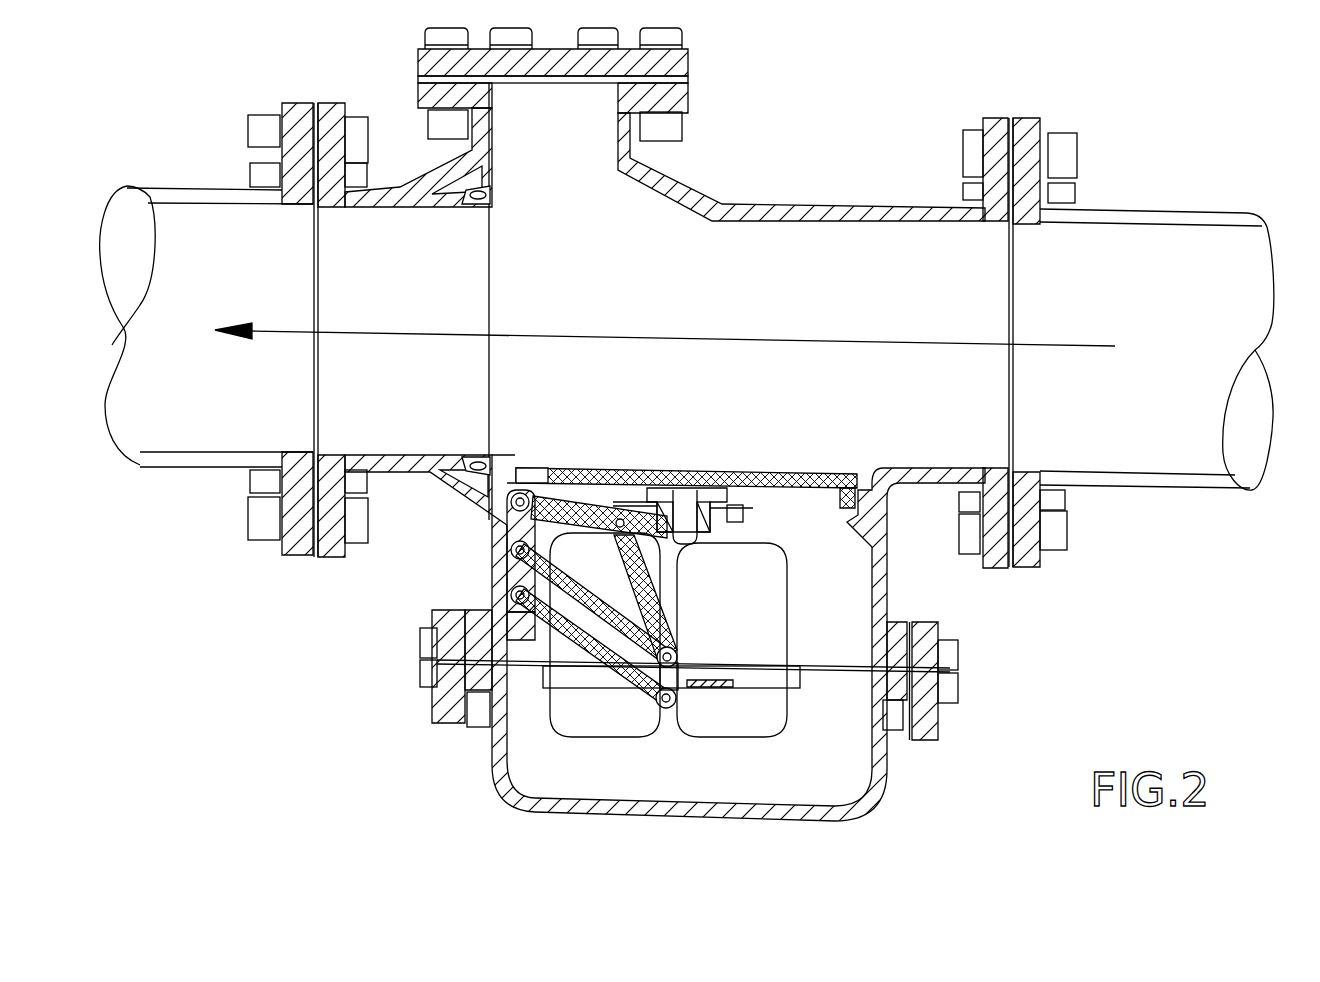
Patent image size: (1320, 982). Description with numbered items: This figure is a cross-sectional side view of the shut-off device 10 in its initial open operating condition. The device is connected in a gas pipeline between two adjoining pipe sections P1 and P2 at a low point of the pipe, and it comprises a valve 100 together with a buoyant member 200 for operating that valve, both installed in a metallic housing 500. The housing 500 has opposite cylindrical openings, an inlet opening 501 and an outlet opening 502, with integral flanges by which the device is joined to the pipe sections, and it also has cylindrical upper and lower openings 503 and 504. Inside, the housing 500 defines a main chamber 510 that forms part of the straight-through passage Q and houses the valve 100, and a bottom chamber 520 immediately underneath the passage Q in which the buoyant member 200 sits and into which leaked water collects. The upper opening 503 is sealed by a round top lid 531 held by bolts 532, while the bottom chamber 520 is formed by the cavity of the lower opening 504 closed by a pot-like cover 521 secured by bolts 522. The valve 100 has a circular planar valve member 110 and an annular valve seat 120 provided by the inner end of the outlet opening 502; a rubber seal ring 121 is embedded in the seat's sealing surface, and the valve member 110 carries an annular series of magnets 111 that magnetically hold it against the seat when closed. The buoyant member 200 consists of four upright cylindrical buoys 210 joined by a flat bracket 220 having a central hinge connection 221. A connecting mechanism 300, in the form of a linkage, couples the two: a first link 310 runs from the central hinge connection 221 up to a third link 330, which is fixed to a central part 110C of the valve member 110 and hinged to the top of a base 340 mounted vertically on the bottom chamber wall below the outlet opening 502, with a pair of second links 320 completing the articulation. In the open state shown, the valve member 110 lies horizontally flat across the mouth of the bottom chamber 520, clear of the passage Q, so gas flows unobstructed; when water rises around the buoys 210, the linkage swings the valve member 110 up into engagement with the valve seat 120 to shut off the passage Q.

The shut-off device 10 is at (302, 683).
The valve 100 is at (716, 313).
The valve member 110 is at (834, 468).
The central part of the valve member 110C is at (681, 490).
The magnets 111 is at (547, 497).
The valve seat 120 is at (494, 241).
The rubber seal ring 121 is at (488, 188).
The buoyant member 200 is at (795, 567).
The buoys 210 is at (723, 723).
The bracket 220 is at (767, 677).
The central hinge connection 221 is at (688, 681).
The connecting mechanism 300 is at (567, 648).
The first link 310 is at (640, 578).
The second links 320 is at (580, 640).
The third link 330 is at (590, 517).
The base 340 is at (512, 577).
The housing 500 is at (710, 188).
The inlet opening 501 is at (996, 221).
The outlet opening 502 is at (340, 208).
The upper opening 503 is at (493, 92).
The lower opening 504 is at (870, 655).
The main chamber 510 is at (848, 279).
The bottom chamber 520 is at (722, 789).
The cover 521 is at (500, 762).
The bolts 522 is at (930, 658).
The top lid 531 is at (690, 72).
The bolts 532 is at (677, 43).
The pipe section P1 is at (196, 190).
The pipe section P2 is at (1147, 216).
The passage Q is at (680, 342).